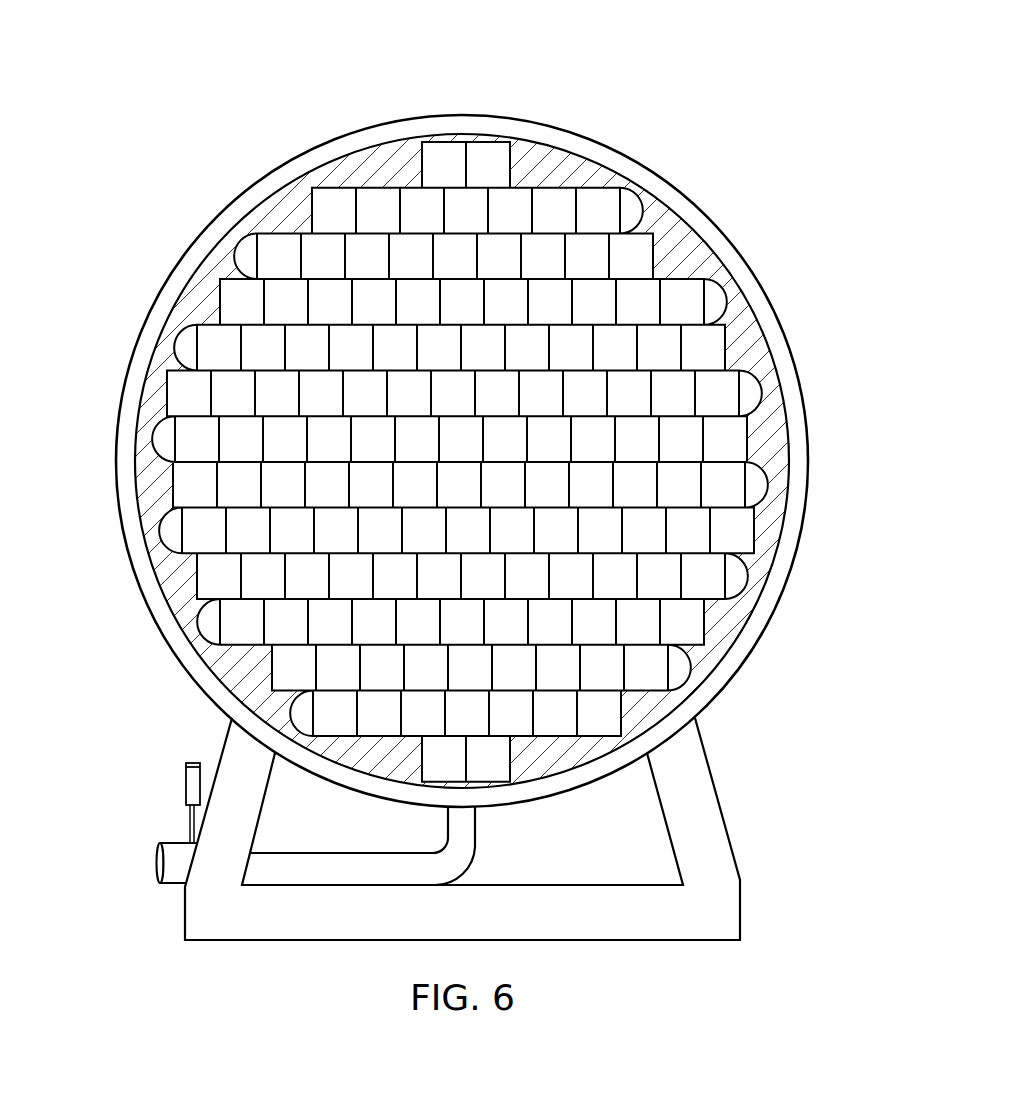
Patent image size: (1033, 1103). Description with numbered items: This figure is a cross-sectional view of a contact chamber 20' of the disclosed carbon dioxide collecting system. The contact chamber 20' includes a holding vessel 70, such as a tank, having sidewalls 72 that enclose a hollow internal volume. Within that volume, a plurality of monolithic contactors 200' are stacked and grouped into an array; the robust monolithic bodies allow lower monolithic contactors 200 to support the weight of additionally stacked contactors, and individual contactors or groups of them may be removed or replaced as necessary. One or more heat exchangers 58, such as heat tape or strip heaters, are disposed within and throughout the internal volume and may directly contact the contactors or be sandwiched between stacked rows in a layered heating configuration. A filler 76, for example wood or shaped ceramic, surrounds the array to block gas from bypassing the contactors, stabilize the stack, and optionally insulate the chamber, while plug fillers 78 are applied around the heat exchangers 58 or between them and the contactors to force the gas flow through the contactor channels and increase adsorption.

The contact chamber 20' is at (516, 477).
The holding vessel 70 is at (439, 461).
The sidewalls 72 is at (439, 461).
The filler 76 is at (422, 461).
The heat exchangers 58 is at (415, 461).
The plug fillers 78 is at (516, 450).
The monolithic contactors 200 is at (460, 462).
The monolithic contactors 200' is at (508, 462).